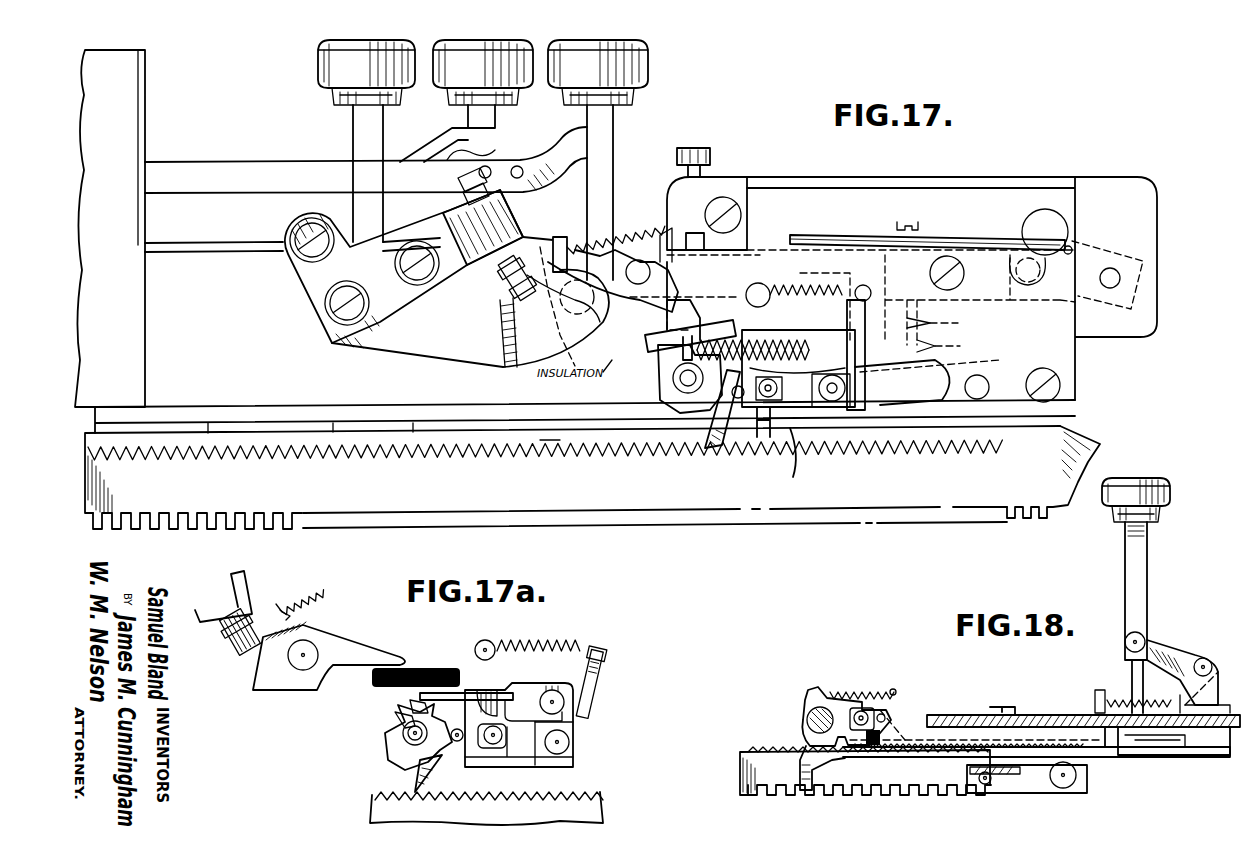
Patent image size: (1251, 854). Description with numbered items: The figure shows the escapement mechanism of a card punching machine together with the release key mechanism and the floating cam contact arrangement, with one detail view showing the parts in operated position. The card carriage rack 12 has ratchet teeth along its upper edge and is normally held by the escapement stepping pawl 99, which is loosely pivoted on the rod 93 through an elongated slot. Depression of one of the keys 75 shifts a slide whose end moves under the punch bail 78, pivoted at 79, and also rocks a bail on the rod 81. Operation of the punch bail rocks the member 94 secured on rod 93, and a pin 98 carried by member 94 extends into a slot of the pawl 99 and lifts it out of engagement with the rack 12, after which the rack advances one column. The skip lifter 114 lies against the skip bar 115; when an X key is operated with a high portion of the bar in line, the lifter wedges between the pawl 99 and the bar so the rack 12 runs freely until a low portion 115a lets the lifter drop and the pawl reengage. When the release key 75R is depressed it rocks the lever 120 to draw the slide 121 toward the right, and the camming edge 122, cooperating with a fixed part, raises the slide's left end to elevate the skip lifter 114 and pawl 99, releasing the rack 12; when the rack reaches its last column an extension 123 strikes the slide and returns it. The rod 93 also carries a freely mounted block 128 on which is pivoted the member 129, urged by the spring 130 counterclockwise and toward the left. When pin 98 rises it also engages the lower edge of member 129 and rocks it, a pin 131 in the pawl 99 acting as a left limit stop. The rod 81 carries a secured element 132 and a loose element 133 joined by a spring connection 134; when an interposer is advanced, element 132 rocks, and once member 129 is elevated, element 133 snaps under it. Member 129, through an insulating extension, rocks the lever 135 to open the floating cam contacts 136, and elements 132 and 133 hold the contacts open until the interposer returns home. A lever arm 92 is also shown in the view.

In FIG. 17, the card carriage rack 12 is at (1068, 462).
In FIG. 17A, the card carriage rack 12 is at (372, 810).
In FIG. 18, the card carriage rack 12 is at (753, 771).
In FIG. 17, the keys 75 is at (577, 67).
In FIG. 18, the release key 75R is at (1143, 486).
In FIG. 17, the punch bail 78 is at (1100, 254).
In FIG. 17, the pivot 79 is at (1107, 285).
In FIG. 17, the rod 81 is at (672, 393).
In FIG. 17A, the rod 81 is at (403, 733).
In FIG. 17, the lever arm 92 is at (946, 320).
In FIG. 17, the rod 93 is at (828, 400).
In FIG. 17A, the rod 93 is at (570, 747).
In FIG. 17, the member 94 is at (930, 355).
In FIG. 17, the pin 98 is at (760, 415).
In FIG. 17A, the pin 98 is at (494, 746).
In FIG. 17, the escapement stepping pawl 99 is at (712, 435).
In FIG. 17A, the escapement stepping pawl 99 is at (412, 781).
In FIG. 18, the escapement stepping pawl 99 is at (853, 690).
In FIG. 17, the skip lifter 114 is at (762, 440).
In FIG. 18, the skip lifter 114 is at (886, 732).
In FIG. 17, the skip bar 115 is at (793, 464).
In FIG. 17, the low portion 115a is at (555, 442).
In FIG. 18, the lever 120 is at (1163, 652).
In FIG. 18, the slide 121 is at (1146, 742).
In FIG. 18, the camming edge 122 is at (832, 766).
In FIG. 18, the extension 123 is at (968, 782).
In FIG. 17, the block 128 is at (882, 388).
In FIG. 17A, the block 128 is at (566, 723).
In FIG. 17, the member 129 is at (790, 337).
In FIG. 17A, the member 129 is at (496, 697).
In FIG. 17, the spring 130 is at (842, 267).
In FIG. 17A, the spring 130 is at (545, 648).
In FIG. 17A, the pin 131 is at (457, 742).
In FIG. 17, the element 132 is at (690, 402).
In FIG. 17A, the element 132 is at (395, 756).
In FIG. 17, the element 133 is at (660, 345).
In FIG. 17A, the element 133 is at (410, 700).
In FIG. 17A, the spring connection 134 is at (395, 714).
In FIG. 17, the lever 135 is at (632, 320).
In FIG. 17A, the lever 135 is at (350, 650).
In FIG. 17, the floating cam contacts 136 is at (492, 300).
In FIG. 17A, the floating cam contacts 136 is at (232, 650).